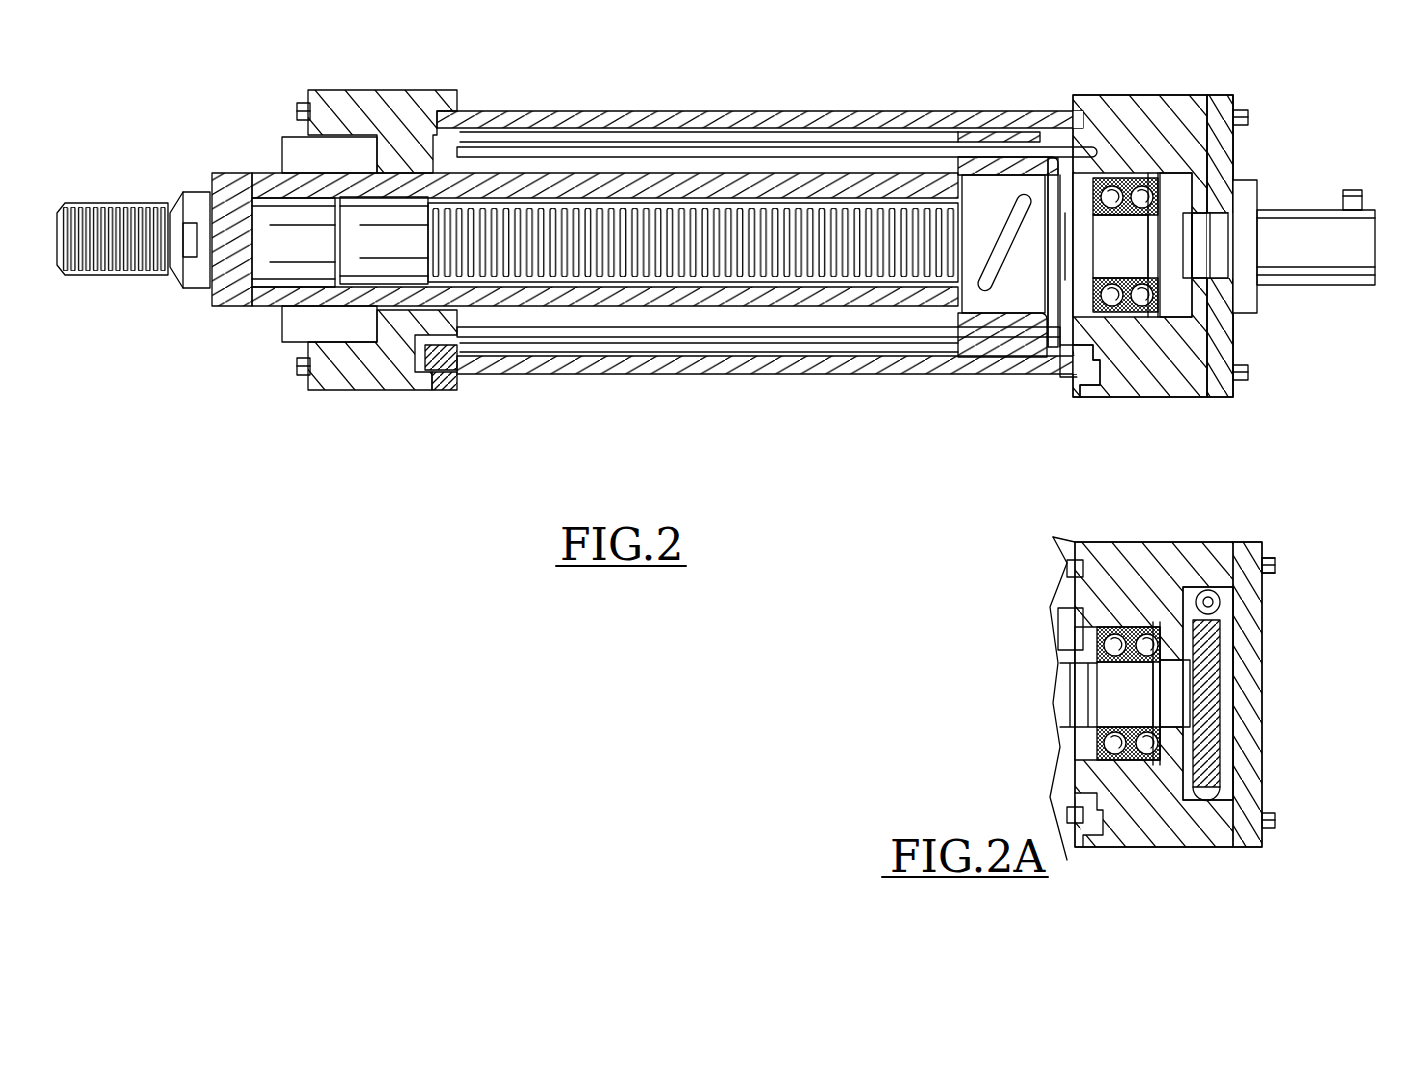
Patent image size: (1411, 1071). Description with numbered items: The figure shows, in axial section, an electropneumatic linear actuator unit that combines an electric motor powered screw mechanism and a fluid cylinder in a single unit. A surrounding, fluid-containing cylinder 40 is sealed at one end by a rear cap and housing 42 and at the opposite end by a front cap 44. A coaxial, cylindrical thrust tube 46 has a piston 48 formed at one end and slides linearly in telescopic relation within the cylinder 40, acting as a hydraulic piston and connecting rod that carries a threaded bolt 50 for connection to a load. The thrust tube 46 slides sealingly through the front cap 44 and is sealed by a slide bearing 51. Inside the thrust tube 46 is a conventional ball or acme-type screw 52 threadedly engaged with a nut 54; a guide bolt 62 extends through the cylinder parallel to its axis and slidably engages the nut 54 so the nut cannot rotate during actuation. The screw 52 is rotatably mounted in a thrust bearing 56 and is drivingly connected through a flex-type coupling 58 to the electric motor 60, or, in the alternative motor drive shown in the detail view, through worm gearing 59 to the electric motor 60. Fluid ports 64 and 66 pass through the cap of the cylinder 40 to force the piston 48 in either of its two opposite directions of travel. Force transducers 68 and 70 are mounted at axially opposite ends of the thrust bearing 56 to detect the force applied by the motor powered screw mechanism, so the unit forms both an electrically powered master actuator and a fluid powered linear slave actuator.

In FIG. 2, the cylinder 40 is at (592, 111).
In FIG. 2, the rear cap and housing 42 is at (1130, 95).
In FIG. 2, the front cap 44 is at (397, 90).
In FIG. 2, the thrust tube 46 is at (232, 306).
In FIG. 2, the piston 48 is at (990, 322).
In FIG. 2, the threaded bolt 50 is at (130, 275).
In FIG. 2, the slide bearing 51 is at (282, 148).
In FIG. 2, the screw 52 is at (607, 210).
In FIG. 2, the nut 54 is at (1015, 257).
In FIG. 2, the thrust bearing 56 is at (1140, 178).
In FIG. 2, the flex-type coupling 58 is at (1233, 257).
In FIG. 2A, the worm gearing 59 is at (1213, 637).
In FIG. 2, the electric motor 60 is at (1297, 210).
In FIG. 2A, the electric motor 60 is at (1210, 540).
In FIG. 2, the guide bolt 62 is at (780, 132).
In FIG. 2, the fluid port 64 is at (417, 390).
In FIG. 2, the fluid port 66 is at (1113, 397).
In FIG. 2, the force transducer 68 is at (1100, 307).
In FIG. 2, the force transducer 70 is at (1207, 317).